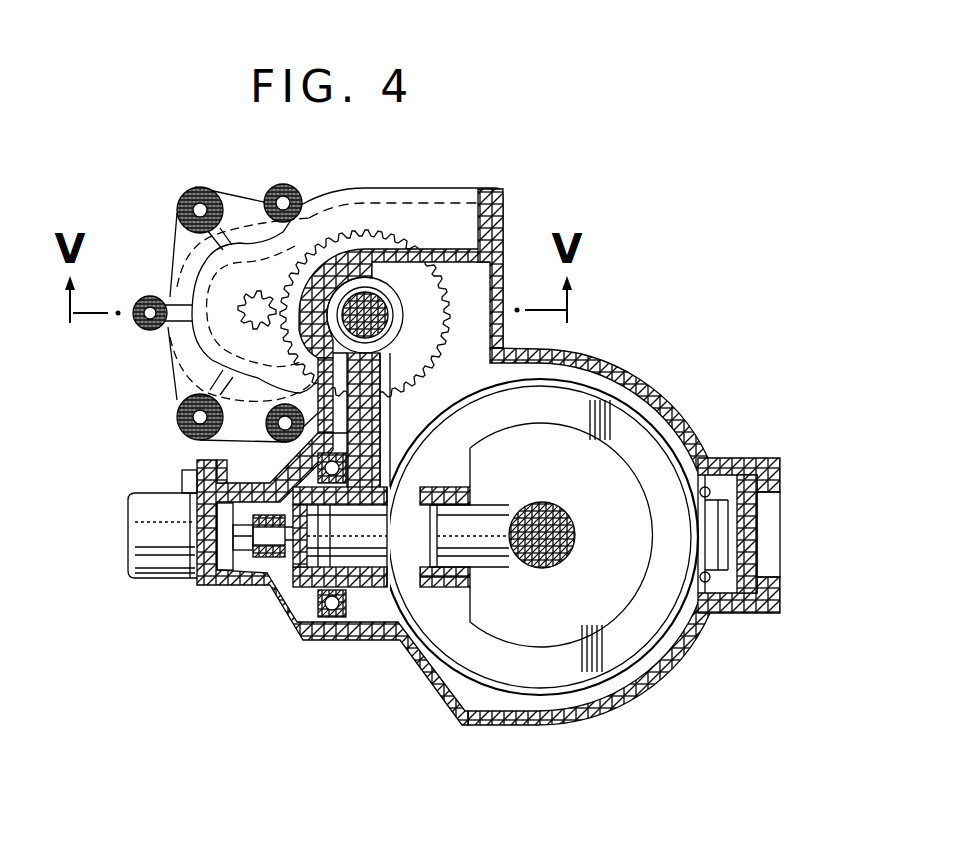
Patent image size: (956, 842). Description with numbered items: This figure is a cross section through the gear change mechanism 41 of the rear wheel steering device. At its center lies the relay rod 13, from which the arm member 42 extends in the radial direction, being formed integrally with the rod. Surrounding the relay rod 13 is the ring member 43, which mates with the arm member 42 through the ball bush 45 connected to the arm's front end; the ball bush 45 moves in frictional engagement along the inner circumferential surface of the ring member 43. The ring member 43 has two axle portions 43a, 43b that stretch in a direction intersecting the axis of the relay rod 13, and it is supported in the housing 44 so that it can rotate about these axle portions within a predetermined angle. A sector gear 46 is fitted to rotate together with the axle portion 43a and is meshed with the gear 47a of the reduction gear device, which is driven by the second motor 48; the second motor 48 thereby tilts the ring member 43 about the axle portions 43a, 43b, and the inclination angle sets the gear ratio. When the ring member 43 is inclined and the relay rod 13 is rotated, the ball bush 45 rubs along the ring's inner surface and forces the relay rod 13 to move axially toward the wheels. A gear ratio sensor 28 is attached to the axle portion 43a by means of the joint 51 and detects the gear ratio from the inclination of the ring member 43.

The relay rod 13 is at (577, 522).
The gear ratio sensor 28 is at (158, 580).
The gear change mechanism 41 is at (402, 668).
The arm member 42 is at (492, 512).
The ring member 43 is at (657, 590).
The axle portion 43a is at (352, 632).
The axle portion 43b is at (757, 527).
The housing 44 is at (650, 393).
The ball bush 45 is at (472, 578).
The sector gear 46 is at (398, 362).
The gear 47a is at (375, 300).
The second motor 48 is at (178, 389).
The joint 51 is at (258, 587).